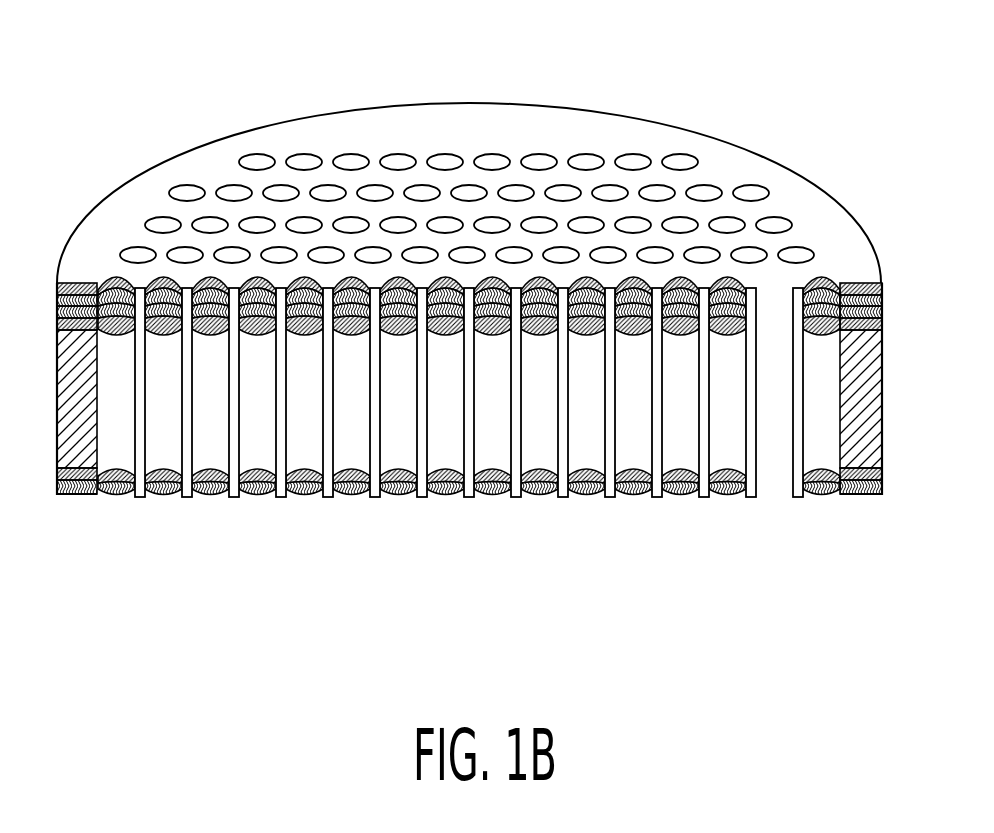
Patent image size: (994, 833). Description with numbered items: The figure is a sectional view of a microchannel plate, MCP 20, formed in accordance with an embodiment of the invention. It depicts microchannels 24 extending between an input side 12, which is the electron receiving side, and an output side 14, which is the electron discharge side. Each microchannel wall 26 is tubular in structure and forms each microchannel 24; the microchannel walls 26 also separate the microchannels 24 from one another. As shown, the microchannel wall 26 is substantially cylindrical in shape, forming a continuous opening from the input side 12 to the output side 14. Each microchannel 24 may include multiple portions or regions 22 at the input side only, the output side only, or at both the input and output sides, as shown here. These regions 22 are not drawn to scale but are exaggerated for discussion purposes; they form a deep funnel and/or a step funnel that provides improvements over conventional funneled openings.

The microchannel plate 20 is at (495, 46).
The input side 12 is at (820, 206).
The output side 14 is at (862, 496).
The multiple portions or regions 22 is at (303, 287).
The microchannel 24 is at (308, 455).
The microchannel wall 26 is at (423, 455).